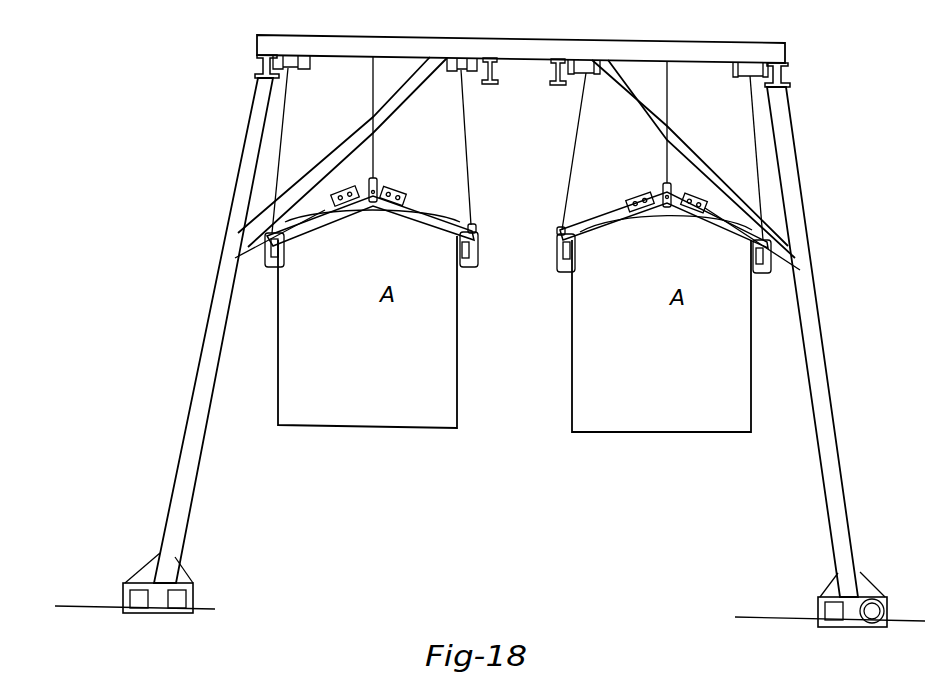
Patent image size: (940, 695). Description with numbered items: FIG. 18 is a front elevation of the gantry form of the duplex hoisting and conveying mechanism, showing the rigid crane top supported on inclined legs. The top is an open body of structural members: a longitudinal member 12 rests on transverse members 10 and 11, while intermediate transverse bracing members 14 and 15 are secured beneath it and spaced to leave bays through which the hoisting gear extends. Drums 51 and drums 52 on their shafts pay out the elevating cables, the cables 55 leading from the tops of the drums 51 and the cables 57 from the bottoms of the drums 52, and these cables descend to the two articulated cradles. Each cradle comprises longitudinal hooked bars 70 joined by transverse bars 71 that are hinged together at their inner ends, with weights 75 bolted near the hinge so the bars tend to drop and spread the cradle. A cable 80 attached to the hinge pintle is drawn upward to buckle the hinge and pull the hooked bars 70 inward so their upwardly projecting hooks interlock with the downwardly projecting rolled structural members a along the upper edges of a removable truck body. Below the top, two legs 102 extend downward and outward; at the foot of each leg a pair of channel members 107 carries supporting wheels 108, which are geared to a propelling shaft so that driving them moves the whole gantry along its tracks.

The longitudinal member 12 is at (543, 44).
The transverse member 10 is at (258, 65).
The transverse member 11 is at (784, 73).
The rear leg 102 is at (199, 456).
The channel member 107 is at (193, 590).
The supporting wheel 108 is at (886, 608).
The drum 51 is at (295, 69).
The intermediate transverse bracing member 14 is at (496, 78).
The intermediate transverse bracing member 15 is at (551, 78).
The drum 52 is at (587, 74).
The cable 55 is at (280, 128).
The cable 57 is at (574, 143).
The cable 80 is at (375, 145).
The transverse bar 71 is at (313, 216).
The weight 75 is at (395, 191).
The longitudinal hooked bar 70 is at (268, 268).
The rolled structural member a is at (284, 249).